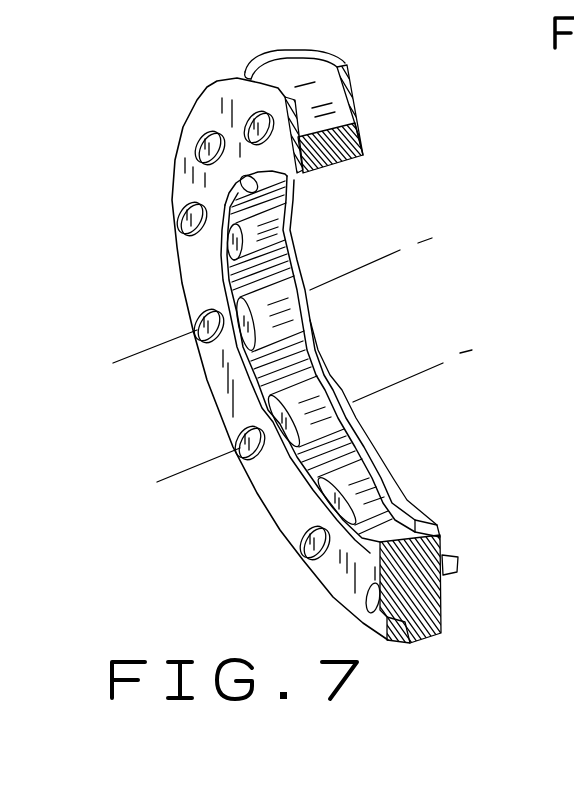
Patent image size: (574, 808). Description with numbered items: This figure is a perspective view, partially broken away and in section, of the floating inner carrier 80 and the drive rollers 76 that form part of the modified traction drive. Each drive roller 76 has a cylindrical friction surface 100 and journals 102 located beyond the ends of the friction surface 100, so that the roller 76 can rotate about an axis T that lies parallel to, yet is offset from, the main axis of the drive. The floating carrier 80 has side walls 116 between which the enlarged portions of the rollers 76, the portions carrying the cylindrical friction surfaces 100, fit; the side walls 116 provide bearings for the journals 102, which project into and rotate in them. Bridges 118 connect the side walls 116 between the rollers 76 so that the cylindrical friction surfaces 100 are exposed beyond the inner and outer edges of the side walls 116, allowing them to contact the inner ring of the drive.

The drive roller 76 is at (245, 72).
The floating inner carrier 80 is at (173, 252).
The cylindrical friction surface 100 is at (287, 50).
The journal 102 is at (207, 353).
The side wall 116 is at (360, 92).
The bridge 118 is at (345, 170).
The axis T is at (95, 373).